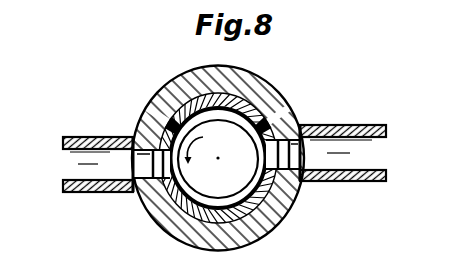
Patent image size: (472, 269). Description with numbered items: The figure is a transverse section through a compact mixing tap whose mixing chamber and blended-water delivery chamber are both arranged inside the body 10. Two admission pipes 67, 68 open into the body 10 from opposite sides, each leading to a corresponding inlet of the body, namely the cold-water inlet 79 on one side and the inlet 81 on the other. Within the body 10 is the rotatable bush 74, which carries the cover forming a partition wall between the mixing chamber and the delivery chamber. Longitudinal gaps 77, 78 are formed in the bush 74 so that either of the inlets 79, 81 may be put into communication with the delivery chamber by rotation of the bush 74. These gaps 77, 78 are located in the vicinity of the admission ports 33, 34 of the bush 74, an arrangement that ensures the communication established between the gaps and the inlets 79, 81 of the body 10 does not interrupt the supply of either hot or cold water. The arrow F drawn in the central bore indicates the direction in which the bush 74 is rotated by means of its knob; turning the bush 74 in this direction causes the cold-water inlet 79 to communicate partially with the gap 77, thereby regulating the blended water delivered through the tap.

The body 10 is at (158, 231).
The admission port 33 is at (140, 192).
The admission port 34 is at (303, 190).
The admission pipe 67 is at (95, 136).
The admission pipe 68 is at (358, 182).
The bush 74 is at (243, 103).
The longitudinal gap 77 is at (167, 125).
The longitudinal gap 78 is at (270, 126).
The cold-water inlet 79 is at (135, 148).
The inlet 81 is at (295, 153).